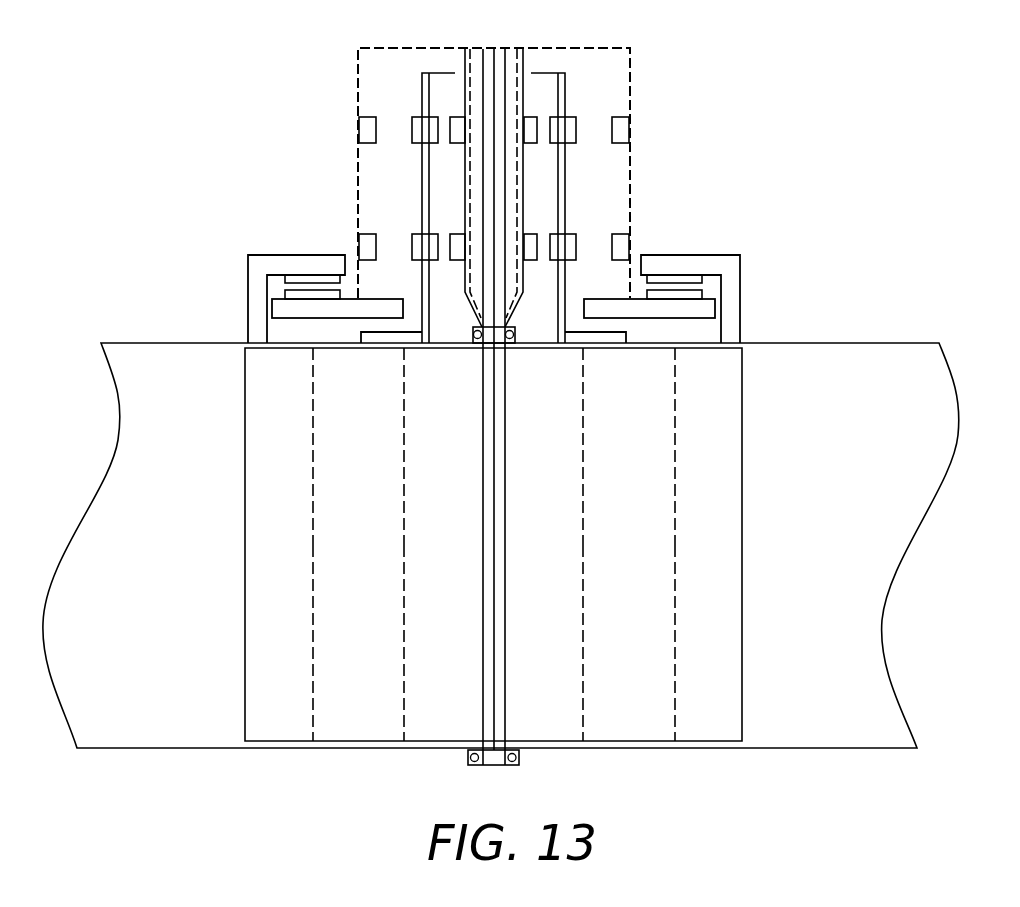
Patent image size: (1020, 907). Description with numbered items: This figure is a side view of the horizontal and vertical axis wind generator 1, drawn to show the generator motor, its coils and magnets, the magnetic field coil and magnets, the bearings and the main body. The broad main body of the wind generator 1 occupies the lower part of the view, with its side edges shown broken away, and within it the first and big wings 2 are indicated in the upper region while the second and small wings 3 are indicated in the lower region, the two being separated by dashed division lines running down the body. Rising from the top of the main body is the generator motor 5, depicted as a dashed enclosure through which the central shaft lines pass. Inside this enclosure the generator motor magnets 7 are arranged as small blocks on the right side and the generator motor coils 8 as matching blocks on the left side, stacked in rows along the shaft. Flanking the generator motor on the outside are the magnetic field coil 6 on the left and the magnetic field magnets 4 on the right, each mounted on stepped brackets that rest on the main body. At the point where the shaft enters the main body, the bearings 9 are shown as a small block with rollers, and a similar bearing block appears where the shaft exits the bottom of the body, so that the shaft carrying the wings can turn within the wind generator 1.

The horizontal and vertical axis wind generator 1 is at (167, 623).
The first and big wings 2 is at (453, 483).
The second and small wings 3 is at (452, 639).
The magnetic field magnets 4 is at (715, 312).
The generator motor 5 is at (616, 66).
The magnetic field coil 6 is at (289, 256).
The generator motor magnets 7 is at (620, 238).
The generator motor coils 8 is at (418, 118).
The bearings 9 is at (497, 338).